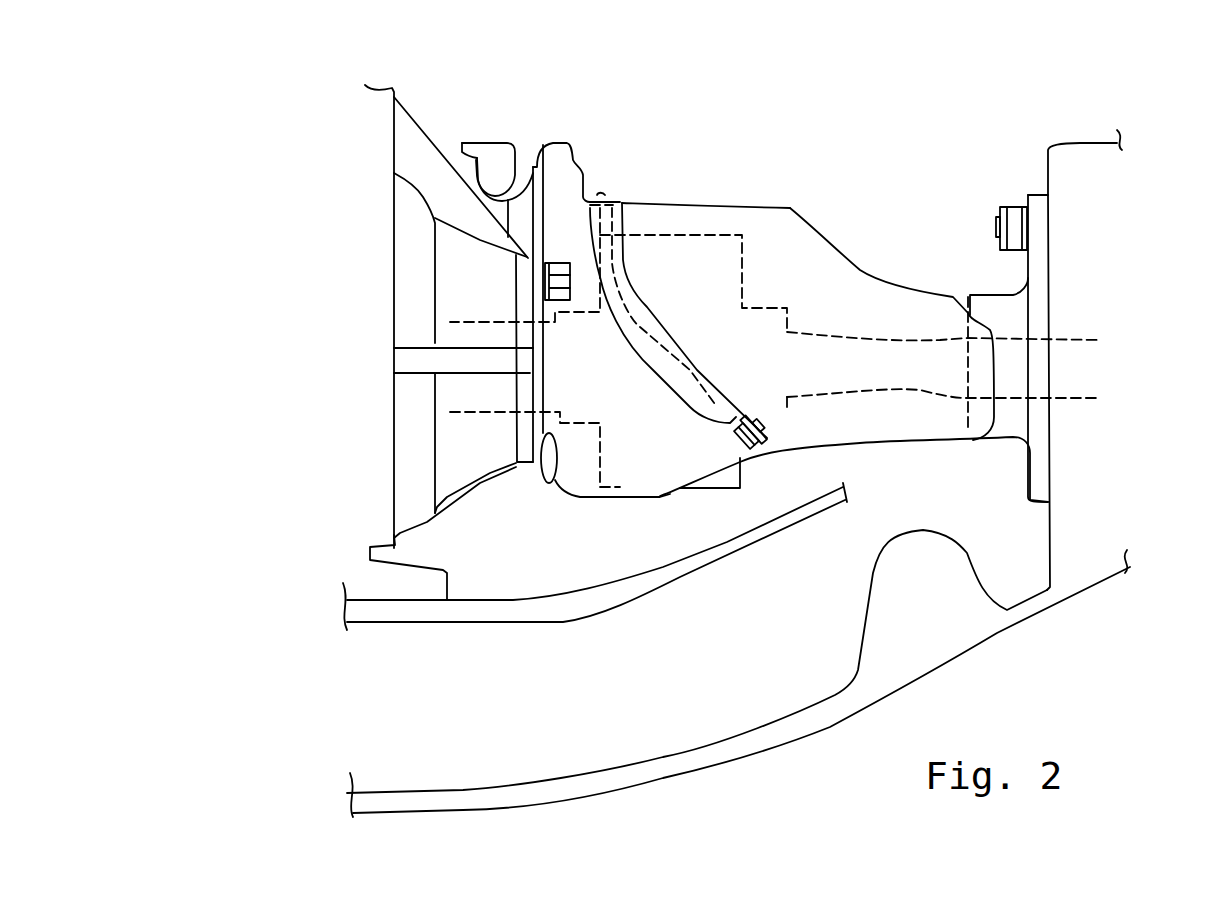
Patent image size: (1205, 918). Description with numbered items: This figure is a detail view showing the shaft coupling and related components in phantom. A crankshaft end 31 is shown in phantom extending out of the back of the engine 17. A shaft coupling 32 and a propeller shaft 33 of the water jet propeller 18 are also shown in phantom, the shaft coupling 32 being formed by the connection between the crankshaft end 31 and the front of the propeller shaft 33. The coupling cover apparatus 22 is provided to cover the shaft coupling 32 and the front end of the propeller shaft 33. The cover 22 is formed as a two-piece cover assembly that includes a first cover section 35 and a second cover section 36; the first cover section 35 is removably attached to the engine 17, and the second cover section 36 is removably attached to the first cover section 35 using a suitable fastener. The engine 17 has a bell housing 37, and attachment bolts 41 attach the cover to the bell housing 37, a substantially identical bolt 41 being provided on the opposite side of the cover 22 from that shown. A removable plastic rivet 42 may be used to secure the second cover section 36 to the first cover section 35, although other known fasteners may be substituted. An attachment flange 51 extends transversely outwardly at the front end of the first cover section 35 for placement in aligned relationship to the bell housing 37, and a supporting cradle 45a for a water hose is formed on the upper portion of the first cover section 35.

The engine 17 is at (268, 240).
The water jet propeller 18 is at (1190, 217).
The coupling cover apparatus 22 is at (713, 155).
The crankshaft end 31 is at (494, 322).
The shaft coupling 32 is at (745, 282).
The propeller shaft 33 is at (1087, 340).
The first cover section 35 is at (593, 162).
The second cover section 36 is at (807, 200).
The bell housing 37 is at (555, 480).
The attachment bolt 41 is at (560, 260).
The removable plastic rivet 42 is at (768, 422).
The supporting cradle 45a is at (493, 148).
The attachment flange 51 is at (528, 255).